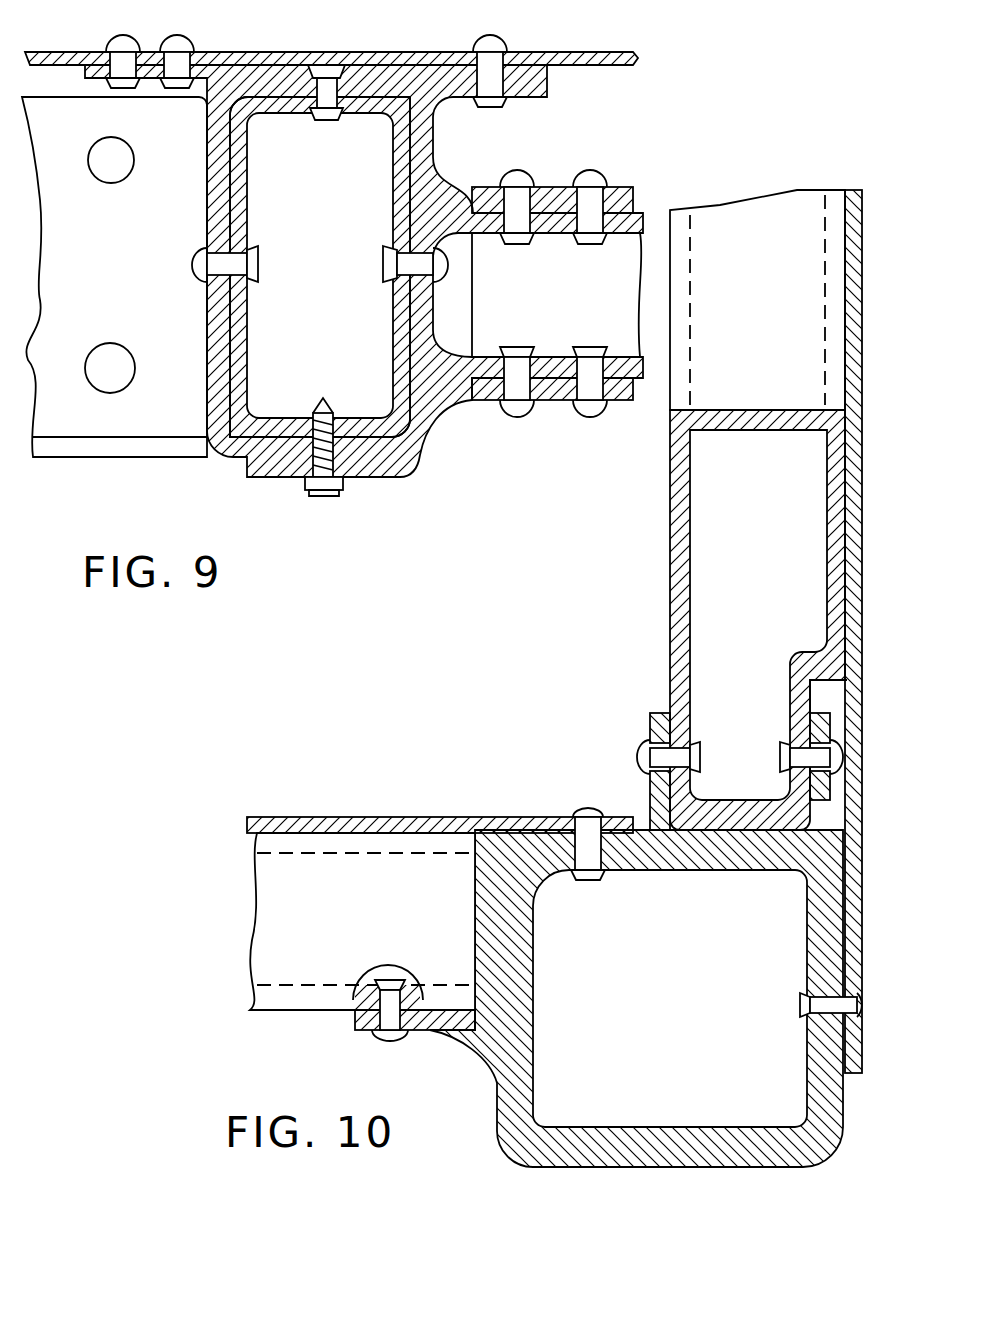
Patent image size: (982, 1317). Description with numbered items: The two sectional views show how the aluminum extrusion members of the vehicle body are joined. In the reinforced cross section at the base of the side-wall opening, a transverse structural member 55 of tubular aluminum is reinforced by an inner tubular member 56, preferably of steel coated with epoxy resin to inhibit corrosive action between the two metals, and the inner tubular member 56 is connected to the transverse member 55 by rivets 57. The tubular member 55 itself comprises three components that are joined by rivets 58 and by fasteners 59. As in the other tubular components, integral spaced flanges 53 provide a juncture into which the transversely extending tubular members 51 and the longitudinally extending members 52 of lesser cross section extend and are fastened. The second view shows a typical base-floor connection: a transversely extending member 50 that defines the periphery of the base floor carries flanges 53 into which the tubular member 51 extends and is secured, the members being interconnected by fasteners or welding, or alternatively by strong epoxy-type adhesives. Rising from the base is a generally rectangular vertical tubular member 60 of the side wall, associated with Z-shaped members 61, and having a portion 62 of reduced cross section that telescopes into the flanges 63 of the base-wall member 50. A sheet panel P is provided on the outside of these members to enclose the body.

In FIG. 10, the transversely extending member 50 is at (620, 1126).
In FIG. 10, the transversely extending tubular member 51 is at (278, 943).
In FIG. 9, the longitudinally extending member 52 is at (540, 215).
In FIG. 9, the flange 53 is at (621, 196).
In FIG. 10, the flange 53 is at (457, 1024).
In FIG. 9, the transverse structural member 55 is at (430, 161).
In FIG. 9, the inner tubular member 56 is at (400, 192).
In FIG. 9, the rivet 57 is at (384, 253).
In FIG. 9, the rivet 58 is at (177, 44).
In FIG. 9, the fastener 59 is at (344, 489).
In FIG. 10, the vertical tubular member 60 is at (683, 564).
In FIG. 10, the Z-shaped member 61 is at (740, 217).
In FIG. 10, the portion of reduced cross section 62 is at (800, 706).
In FIG. 10, the flange 63 is at (660, 733).
In FIG. 10, the sheet panel P is at (853, 288).